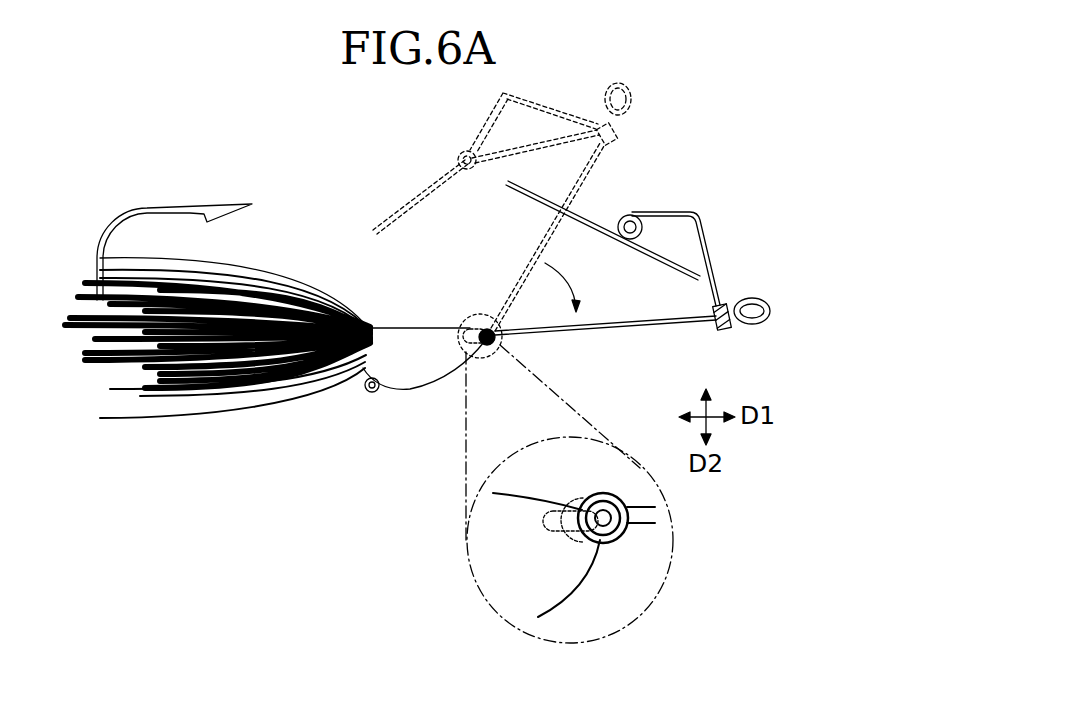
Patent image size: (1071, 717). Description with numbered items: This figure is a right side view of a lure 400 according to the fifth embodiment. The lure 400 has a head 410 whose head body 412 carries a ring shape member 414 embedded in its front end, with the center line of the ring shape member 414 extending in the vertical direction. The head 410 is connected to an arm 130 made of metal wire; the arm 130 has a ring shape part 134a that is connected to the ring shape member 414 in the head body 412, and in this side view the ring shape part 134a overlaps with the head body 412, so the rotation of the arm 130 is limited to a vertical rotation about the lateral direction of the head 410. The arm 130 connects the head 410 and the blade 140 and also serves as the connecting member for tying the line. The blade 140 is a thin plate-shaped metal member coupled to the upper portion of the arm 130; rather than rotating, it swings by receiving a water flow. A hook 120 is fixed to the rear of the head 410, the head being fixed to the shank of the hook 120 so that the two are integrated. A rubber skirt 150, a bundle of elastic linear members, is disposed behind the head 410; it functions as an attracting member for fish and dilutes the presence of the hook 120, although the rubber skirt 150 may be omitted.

The lure 400 is at (705, 82).
The hook 120 is at (191, 207).
The rubber skirt 150 is at (213, 427).
The head 410 is at (425, 393).
The head body 412 is at (389, 385).
The ring shape member 414 is at (476, 329).
The ring shape part 134a is at (487, 324).
The blade 140 is at (600, 212).
The arm 130 is at (729, 266).